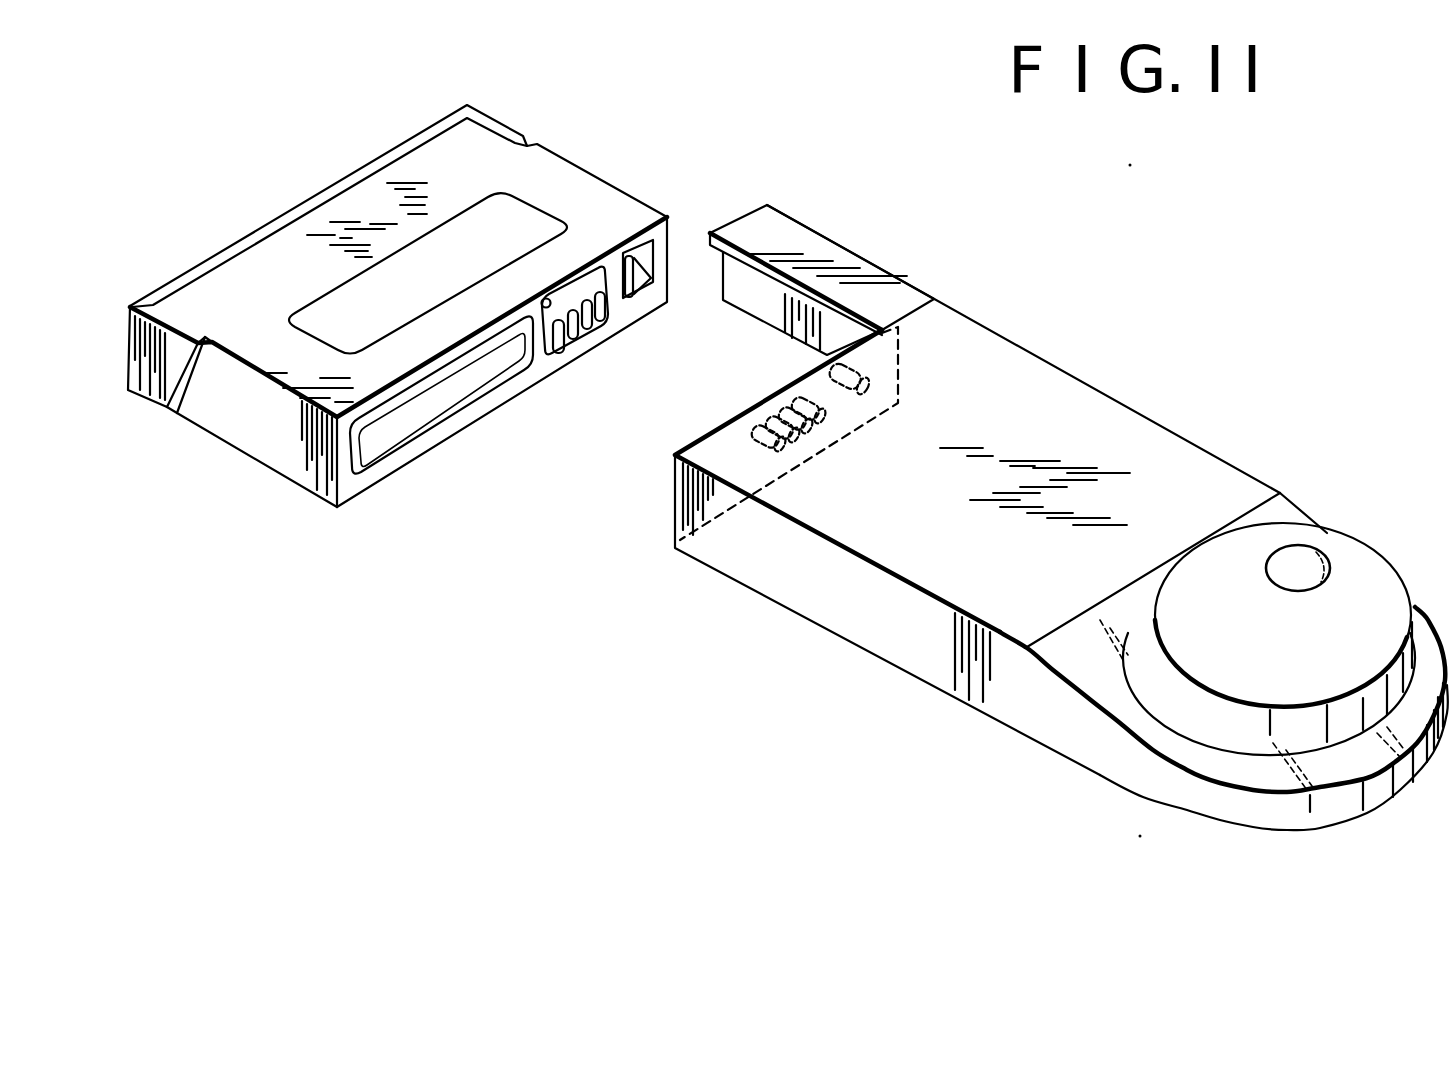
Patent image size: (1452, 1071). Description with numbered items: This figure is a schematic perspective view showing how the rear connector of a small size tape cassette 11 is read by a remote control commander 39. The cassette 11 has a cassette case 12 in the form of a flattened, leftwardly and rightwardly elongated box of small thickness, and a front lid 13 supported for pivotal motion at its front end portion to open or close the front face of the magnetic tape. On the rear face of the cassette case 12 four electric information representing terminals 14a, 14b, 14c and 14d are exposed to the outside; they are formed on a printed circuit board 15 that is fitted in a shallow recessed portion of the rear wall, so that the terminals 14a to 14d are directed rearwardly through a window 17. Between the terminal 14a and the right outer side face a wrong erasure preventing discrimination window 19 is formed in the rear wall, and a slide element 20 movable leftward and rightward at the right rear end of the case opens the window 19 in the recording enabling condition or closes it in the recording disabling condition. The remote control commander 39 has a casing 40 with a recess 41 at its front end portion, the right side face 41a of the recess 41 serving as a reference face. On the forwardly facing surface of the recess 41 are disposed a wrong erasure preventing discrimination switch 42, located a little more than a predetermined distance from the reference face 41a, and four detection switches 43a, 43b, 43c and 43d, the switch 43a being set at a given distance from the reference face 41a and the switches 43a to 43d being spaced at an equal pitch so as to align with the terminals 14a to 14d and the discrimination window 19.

The small size tape cassette 11 is at (593, 102).
The cassette case 12 is at (572, 159).
The front lid 13 is at (402, 142).
The electric information representing terminal 14a is at (601, 292).
The electric information representing terminal 14b is at (586, 300).
The electric information representing terminal 14c is at (571, 309).
The electric information representing terminal 14d is at (548, 345).
The printed circuit board 15 is at (535, 335).
The window 17 is at (544, 300).
The wrong erasure preventing discrimination window 19 is at (655, 248).
The slide element 20 is at (635, 259).
The remote control commander 39 is at (1068, 373).
The casing 40 is at (1138, 436).
The recess 41 is at (671, 449).
The right side face 41a is at (767, 298).
The wrong erasure preventing discrimination switch 42 is at (900, 326).
The detection switch 43a is at (790, 395).
The detection switch 43b is at (778, 408).
The detection switch 43c is at (765, 418).
The detection switch 43d is at (748, 430).